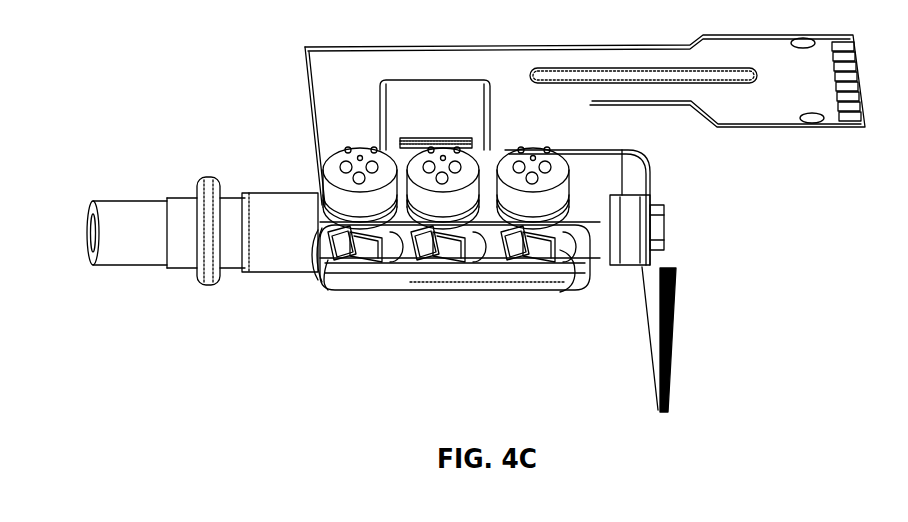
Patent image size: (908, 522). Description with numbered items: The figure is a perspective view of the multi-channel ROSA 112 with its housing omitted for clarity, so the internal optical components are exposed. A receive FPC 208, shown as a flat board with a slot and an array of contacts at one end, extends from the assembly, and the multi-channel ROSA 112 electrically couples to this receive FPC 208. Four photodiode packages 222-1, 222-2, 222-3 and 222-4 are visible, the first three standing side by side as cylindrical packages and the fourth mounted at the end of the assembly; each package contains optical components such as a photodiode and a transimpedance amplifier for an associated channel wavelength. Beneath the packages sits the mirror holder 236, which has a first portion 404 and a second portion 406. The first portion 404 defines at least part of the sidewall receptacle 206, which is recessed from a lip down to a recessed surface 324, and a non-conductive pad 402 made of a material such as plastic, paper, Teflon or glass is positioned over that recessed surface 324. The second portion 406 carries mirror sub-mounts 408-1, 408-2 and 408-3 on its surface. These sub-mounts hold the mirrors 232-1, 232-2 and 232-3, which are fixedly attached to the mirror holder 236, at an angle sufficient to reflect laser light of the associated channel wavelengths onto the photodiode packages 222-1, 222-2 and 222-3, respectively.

The multi-channel ROSA 112 is at (219, 136).
The receive FPC 208 is at (758, 124).
The sidewall receptacle 206 is at (460, 298).
The non-conductive pad 402 is at (418, 284).
The recessed surface 324 is at (470, 282).
The mirror holder 236 is at (557, 278).
The second portion of the mirror holder 406 is at (318, 252).
The first portion of the mirror holder 404 is at (322, 280).
The photodiode package 222-1 is at (353, 160).
The photodiode package 222-2 is at (455, 152).
The photodiode package 222-3 is at (530, 160).
The photodiode package 222-4 is at (642, 210).
The mirror sub-mount 408-1 is at (340, 237).
The mirror sub-mount 408-2 is at (421, 228).
The mirror sub-mount 408-3 is at (512, 229).
The mirror 232-1 is at (356, 252).
The mirror 232-2 is at (435, 252).
The mirror 232-3 is at (535, 250).